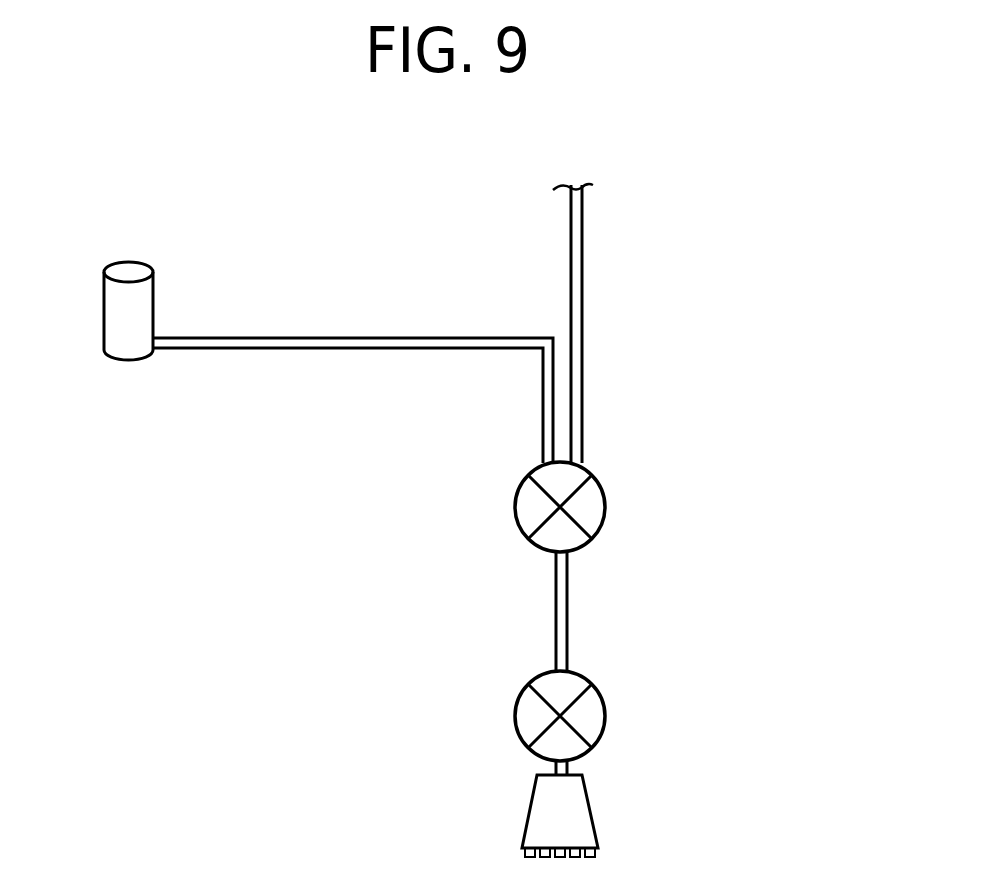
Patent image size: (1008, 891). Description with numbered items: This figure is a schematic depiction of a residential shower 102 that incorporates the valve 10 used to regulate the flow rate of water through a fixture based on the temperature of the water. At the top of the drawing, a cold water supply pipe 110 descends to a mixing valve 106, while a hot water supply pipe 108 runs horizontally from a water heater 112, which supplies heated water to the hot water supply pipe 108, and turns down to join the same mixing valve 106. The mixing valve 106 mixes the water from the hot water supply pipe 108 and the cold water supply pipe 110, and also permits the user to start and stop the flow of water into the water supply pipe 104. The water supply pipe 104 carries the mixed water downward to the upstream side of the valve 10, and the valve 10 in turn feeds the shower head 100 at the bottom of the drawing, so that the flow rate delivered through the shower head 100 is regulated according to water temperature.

The valve 10 is at (598, 688).
The shower head 100 is at (592, 810).
The residential shower 102 is at (778, 280).
The water supply pipe 104 is at (568, 600).
The mixing valve 106 is at (607, 500).
The hot water supply pipe 108 is at (343, 337).
The cold water supply pipe 110 is at (584, 212).
The water heater 112 is at (104, 308).